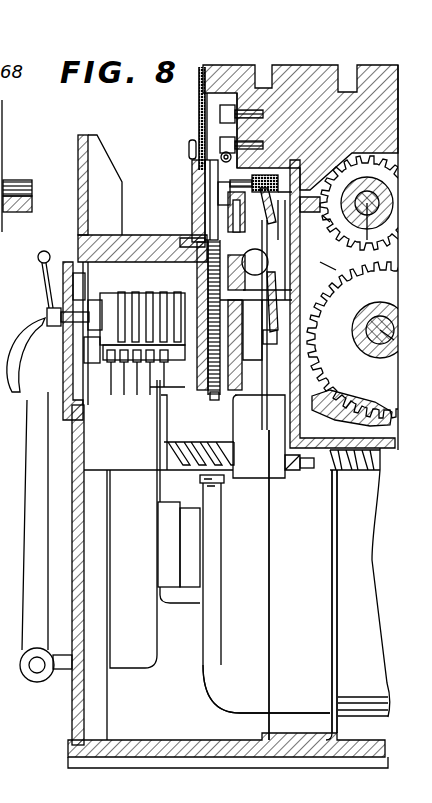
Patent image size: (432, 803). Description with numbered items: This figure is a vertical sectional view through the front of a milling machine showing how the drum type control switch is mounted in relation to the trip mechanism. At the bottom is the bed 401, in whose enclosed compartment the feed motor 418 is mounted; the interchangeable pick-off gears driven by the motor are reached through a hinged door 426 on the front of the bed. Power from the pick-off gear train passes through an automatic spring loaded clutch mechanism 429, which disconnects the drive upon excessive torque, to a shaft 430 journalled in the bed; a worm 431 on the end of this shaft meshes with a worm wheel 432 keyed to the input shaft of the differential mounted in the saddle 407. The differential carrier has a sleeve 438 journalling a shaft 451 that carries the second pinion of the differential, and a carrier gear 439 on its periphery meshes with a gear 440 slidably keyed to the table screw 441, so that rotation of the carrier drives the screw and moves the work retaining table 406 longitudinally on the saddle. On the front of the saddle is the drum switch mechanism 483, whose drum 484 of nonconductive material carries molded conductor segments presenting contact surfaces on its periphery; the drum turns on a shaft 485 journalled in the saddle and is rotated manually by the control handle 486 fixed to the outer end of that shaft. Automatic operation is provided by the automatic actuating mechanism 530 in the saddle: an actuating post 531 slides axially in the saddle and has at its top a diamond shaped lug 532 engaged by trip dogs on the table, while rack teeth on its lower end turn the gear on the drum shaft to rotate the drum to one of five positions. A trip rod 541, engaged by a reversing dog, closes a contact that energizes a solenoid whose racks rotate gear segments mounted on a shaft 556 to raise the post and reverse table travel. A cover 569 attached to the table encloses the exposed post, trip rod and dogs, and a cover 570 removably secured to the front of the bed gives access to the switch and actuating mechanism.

The bed 401 is at (72, 735).
The table 406 is at (306, 88).
The saddle 407 is at (194, 205).
The feed motor 418 is at (236, 665).
The hinged door 426 is at (32, 570).
The clutch mechanism 429 is at (300, 466).
The shaft 430 is at (320, 470).
The worm 431 is at (362, 468).
The worm wheel 432 is at (349, 414).
The carrier sleeve 438 is at (370, 338).
The carrier gear 439 is at (325, 258).
The gear 440 is at (325, 226).
The table screw 441 is at (367, 215).
The shaft 451 is at (386, 356).
The drum switch mechanism 483 is at (141, 413).
The drum 484 is at (113, 293).
The shaft 485 is at (47, 315).
The control handle 486 is at (50, 242).
The automatic actuating mechanism 530 is at (214, 405).
The actuating post 531 is at (205, 188).
The diamond shaped lug 532 is at (207, 140).
The trip rod 541 is at (220, 160).
The shaft 556 is at (267, 305).
The cover 569 is at (199, 108).
The cover 570 is at (62, 408).